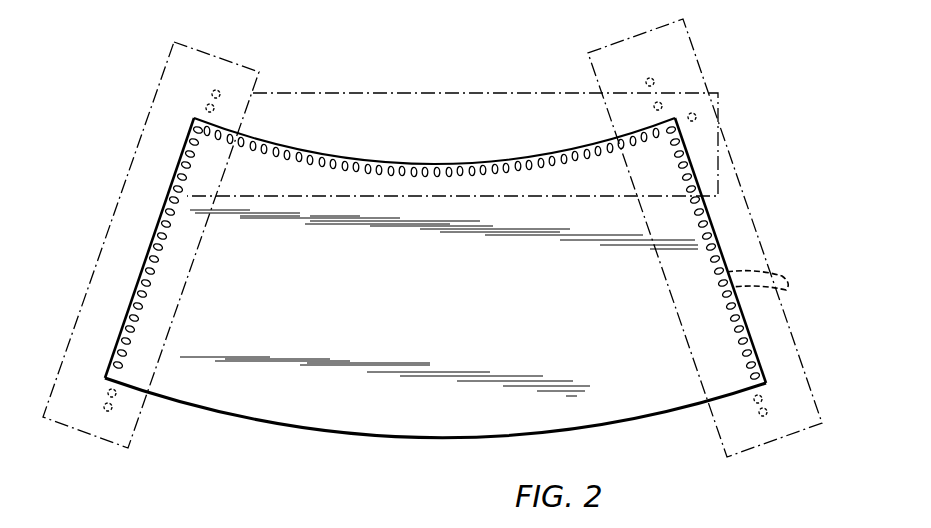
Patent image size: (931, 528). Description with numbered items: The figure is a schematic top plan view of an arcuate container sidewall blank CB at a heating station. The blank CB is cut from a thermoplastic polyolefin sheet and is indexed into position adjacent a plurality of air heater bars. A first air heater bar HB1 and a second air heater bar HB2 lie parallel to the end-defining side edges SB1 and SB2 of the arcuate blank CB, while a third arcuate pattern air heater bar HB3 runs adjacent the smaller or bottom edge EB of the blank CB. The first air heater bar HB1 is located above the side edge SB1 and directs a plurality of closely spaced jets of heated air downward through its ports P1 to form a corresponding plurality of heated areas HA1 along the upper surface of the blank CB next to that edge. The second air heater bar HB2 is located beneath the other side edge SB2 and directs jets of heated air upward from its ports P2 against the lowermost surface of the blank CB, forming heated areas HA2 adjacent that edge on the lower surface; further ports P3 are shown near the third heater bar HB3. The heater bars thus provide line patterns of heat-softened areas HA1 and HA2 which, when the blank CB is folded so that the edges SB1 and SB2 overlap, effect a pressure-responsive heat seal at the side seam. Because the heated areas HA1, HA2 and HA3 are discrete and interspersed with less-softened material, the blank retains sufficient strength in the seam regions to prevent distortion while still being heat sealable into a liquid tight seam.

The first air heater bar HB1 is at (118, 257).
The second air heater bar HB2 is at (737, 221).
The third arcuate pattern air heater bar HB3 is at (568, 100).
The ports P1 is at (218, 88).
The ports P2 is at (654, 79).
The third pivot P3 is at (694, 113).
The side edge SB1 is at (118, 336).
The side edge SB2 is at (752, 340).
The bottom edge EB is at (300, 138).
The container sidewall blank CB is at (456, 334).
The heated areas HA1 is at (175, 200).
The heated areas HA2 is at (775, 287).
The heated areas HA3 is at (400, 166).